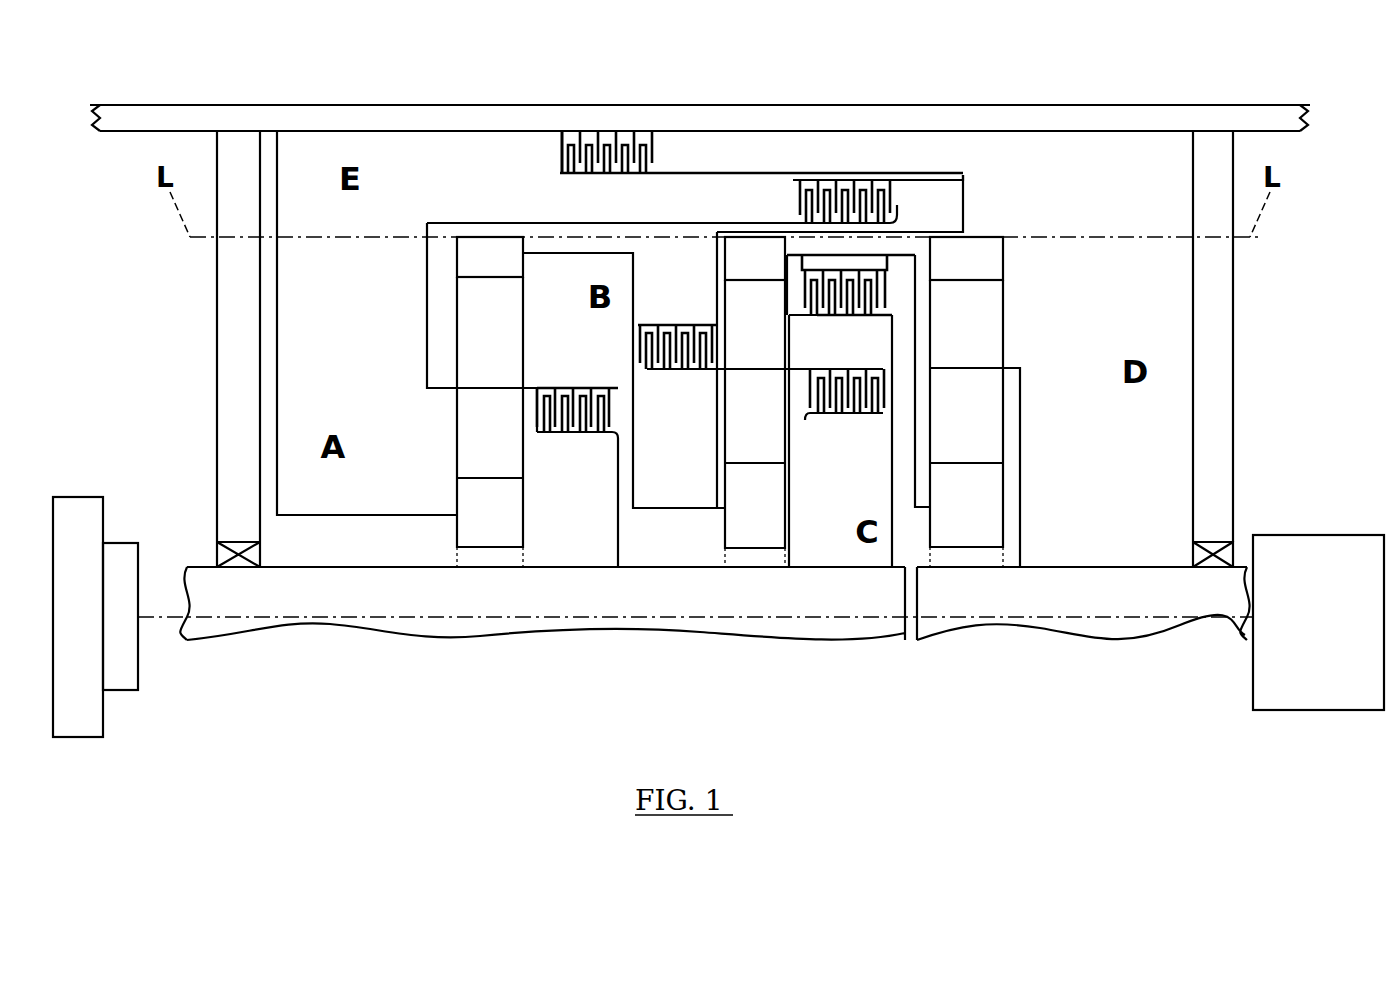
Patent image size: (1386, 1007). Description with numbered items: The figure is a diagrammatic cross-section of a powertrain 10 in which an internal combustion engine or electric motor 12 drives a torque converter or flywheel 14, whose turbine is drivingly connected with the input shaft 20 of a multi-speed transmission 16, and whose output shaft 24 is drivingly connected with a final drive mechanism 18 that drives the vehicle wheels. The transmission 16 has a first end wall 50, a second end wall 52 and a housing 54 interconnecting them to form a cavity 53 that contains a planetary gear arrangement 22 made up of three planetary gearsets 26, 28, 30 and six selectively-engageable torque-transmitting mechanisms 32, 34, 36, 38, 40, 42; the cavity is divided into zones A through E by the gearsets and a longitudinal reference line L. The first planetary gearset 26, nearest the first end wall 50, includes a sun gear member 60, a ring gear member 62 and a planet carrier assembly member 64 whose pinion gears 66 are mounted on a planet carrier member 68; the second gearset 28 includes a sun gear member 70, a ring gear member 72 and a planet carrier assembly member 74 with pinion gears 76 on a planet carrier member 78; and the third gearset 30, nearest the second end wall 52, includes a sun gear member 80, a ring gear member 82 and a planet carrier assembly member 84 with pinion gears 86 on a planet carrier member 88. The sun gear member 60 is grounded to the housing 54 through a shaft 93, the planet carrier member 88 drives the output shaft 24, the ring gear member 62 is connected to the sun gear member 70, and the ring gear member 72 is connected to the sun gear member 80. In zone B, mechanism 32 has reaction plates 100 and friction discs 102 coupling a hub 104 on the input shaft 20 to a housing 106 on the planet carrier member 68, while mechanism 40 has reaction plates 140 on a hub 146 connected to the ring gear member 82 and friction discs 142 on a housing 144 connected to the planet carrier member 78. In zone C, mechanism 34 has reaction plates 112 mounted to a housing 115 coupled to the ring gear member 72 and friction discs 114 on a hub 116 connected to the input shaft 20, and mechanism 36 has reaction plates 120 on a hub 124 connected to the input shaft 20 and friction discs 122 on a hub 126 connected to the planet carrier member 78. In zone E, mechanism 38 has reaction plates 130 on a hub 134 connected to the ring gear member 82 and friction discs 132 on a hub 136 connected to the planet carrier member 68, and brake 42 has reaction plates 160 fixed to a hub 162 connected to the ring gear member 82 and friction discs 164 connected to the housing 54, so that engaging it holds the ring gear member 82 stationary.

The powertrain 10 is at (328, 82).
The internal combustion engine or electric motor 12 is at (91, 598).
The torque converter or flywheel 14 is at (134, 598).
The transmission 16 is at (1252, 457).
The final drive mechanism 18 is at (1253, 687).
The input shaft 20 is at (480, 650).
The planetary gear arrangement 22 is at (440, 205).
The output shaft 24 is at (1125, 640).
The first planetary gearset 26 is at (493, 560).
The second planetary gearset 28 is at (752, 560).
The third planetary gearset 30 is at (972, 560).
The torque-transmitting mechanism 32 is at (537, 432).
The torque-transmitting mechanism 34 is at (812, 318).
The torque-transmitting mechanism 36 is at (810, 416).
The torque-transmitting mechanism 38 is at (797, 188).
The torque-transmitting mechanism 40 is at (640, 356).
The torque-transmitting mechanism 42 is at (565, 175).
The first end wall 50 is at (217, 390).
The second end wall 52 is at (1233, 400).
The cavity 53 is at (1190, 160).
The housing 54 is at (1020, 105).
The sun gear member 60 is at (476, 530).
The ring gear member 62 is at (476, 267).
The planet carrier assembly member 64 is at (378, 386).
The pinion gears 66 is at (476, 355).
The planet carrier member 68 is at (427, 340).
The sun gear member 70 is at (742, 520).
The ring gear member 72 is at (742, 267).
The planet carrier assembly member 74 is at (698, 472).
The pinion gears 76 is at (742, 360).
The planet carrier member 78 is at (765, 372).
The sun gear member 80 is at (954, 520).
The ring gear member 82 is at (954, 267).
The planet carrier assembly member 84 is at (1015, 428).
The pinion gears 86 is at (954, 345).
The planet carrier member 88 is at (1005, 385).
The shaft 93 is at (387, 517).
The reaction plates 100 is at (537, 395).
The friction discs 102 is at (612, 435).
The hub 104 is at (565, 436).
The housing 106 is at (566, 386).
The reaction plates 112 is at (886, 290).
The friction discs 114 is at (812, 287).
The housing 115 is at (875, 272).
The hub 116 is at (935, 360).
The reaction plates 120 is at (810, 410).
The friction discs 122 is at (872, 398).
The hub 124 is at (840, 418).
The hub 126 is at (868, 370).
The reaction plates 130 is at (900, 200).
The friction discs 132 is at (810, 195).
The hub 134 is at (845, 182).
The hub 136 is at (895, 203).
The reaction plates 140 is at (674, 323).
The friction discs 142 is at (655, 372).
The housing 144 is at (704, 371).
The hub 146 is at (665, 322).
The reaction plates 160 is at (575, 142).
The hub 162 is at (585, 175).
The friction discs 164 is at (562, 150).